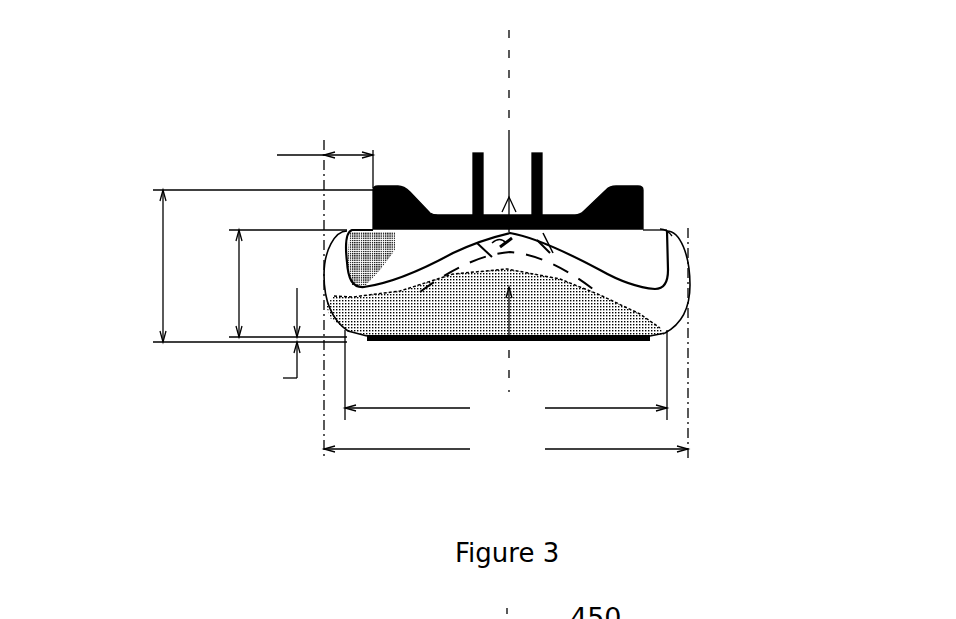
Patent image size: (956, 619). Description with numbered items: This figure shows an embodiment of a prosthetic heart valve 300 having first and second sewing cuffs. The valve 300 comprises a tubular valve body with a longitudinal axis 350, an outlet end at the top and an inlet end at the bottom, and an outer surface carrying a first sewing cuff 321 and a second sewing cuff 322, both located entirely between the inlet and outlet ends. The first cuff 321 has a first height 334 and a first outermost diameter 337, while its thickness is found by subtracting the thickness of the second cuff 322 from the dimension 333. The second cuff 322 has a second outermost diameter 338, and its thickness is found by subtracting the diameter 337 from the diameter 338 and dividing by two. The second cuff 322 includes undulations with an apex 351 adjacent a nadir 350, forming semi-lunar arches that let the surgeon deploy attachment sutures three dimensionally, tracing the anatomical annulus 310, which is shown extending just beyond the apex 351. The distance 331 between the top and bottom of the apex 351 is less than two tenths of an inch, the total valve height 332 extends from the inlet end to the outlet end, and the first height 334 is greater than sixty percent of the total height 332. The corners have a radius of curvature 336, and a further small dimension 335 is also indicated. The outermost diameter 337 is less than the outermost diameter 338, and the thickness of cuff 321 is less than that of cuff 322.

The prosthetic heart valve 300 is at (95, 133).
The annulus 310 is at (548, 228).
The first sewing cuff 321 is at (628, 256).
The second sewing cuff 322 is at (676, 274).
The apex top-to-bottom distance 331 is at (542, 173).
The total valve height 332 is at (257, 266).
The combined cuff thickness dimension 333 is at (297, 163).
The first height 334 is at (280, 283).
The dimension 335 is at (264, 342).
The corner radius of curvature 336 is at (670, 229).
The first outermost diameter 337 is at (506, 376).
The second outermost diameter 338 is at (506, 302).
The nadir 350 is at (514, 55).
The apex 351 is at (478, 237).